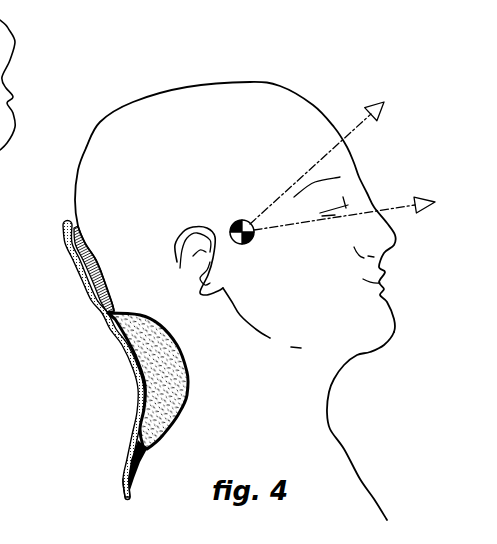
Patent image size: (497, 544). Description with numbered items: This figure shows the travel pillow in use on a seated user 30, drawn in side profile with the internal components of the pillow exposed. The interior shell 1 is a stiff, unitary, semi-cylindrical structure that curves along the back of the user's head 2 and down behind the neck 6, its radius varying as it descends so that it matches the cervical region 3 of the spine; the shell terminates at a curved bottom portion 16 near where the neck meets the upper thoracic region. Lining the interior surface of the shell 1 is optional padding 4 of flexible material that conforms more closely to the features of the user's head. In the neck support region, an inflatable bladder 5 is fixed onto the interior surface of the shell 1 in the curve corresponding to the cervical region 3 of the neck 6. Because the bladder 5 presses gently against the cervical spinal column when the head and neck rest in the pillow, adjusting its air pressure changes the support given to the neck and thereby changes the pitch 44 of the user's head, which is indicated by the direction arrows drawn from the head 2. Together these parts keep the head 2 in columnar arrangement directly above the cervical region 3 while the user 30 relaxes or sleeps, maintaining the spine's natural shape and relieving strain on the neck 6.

The interior shell 1 is at (83, 307).
The head 2 is at (240, 200).
The cervical region 3 is at (203, 396).
The padding 4 is at (78, 270).
The inflatable bladder 5 is at (163, 373).
The neck 6 is at (235, 382).
The curved bottom portion 16 is at (123, 482).
The user 30 is at (242, 125).
The pitch 44 is at (342, 166).